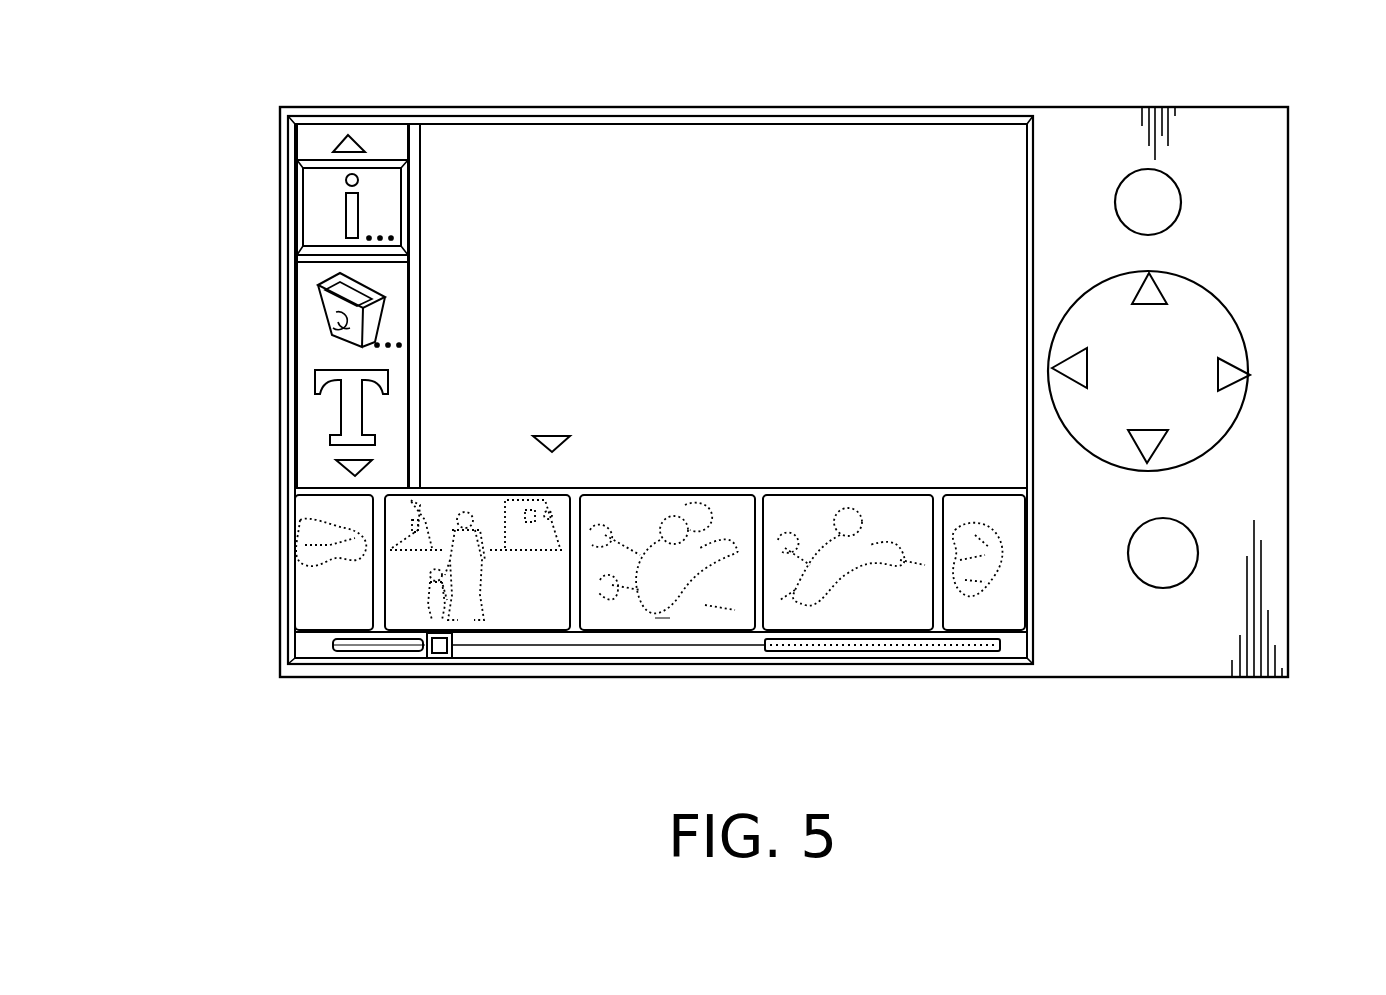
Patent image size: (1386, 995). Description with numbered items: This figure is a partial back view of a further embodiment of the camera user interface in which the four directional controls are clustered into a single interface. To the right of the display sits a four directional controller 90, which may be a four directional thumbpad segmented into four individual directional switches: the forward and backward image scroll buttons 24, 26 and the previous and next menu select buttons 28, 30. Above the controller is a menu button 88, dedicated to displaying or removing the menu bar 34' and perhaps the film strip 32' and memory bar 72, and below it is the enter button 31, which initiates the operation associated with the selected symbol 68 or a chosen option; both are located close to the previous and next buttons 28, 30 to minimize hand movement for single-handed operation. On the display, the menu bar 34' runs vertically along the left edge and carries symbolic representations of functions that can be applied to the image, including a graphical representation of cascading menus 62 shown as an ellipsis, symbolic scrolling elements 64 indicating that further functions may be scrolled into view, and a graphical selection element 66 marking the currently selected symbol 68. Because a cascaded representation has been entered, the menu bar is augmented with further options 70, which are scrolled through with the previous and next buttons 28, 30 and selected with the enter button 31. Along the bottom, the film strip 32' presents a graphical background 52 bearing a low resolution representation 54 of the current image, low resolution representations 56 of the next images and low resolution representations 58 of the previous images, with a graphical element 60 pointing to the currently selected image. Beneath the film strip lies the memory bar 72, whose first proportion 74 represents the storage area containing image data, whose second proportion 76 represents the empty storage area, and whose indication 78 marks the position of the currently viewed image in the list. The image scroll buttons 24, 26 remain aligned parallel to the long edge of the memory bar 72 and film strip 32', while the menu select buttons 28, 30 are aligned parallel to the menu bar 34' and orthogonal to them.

The forward image scroll button 24 is at (1232, 372).
The backward image scroll button 26 is at (1073, 362).
The previous menu select button 28 is at (1155, 445).
The next menu select button 30 is at (1152, 296).
The enter button 31 is at (1185, 550).
The film strip 32' is at (572, 560).
The menu bar 34' is at (287, 394).
The graphical background 52 is at (1020, 492).
The low resolution representation of the current image 54 is at (633, 597).
The low resolution representations of the next image or images 56 is at (907, 600).
The low resolution representations of the previous image or images 58 is at (422, 610).
The graphical element indicating the currently selected image 60 is at (663, 622).
The graphical representation of cascading menus 62 is at (368, 238).
The symbolic scrolling element 64 is at (368, 138).
The graphical selection element 66 is at (325, 188).
The currently selected symbol 68 is at (322, 160).
The further options 70 is at (752, 178).
The memory bar 72 is at (322, 644).
The first proportion 74 is at (413, 647).
The second proportion 76 is at (863, 647).
The indication of the position of the currently viewed image 78 is at (440, 658).
The menu button 88 is at (1172, 200).
The four directional controller 90 is at (1232, 323).